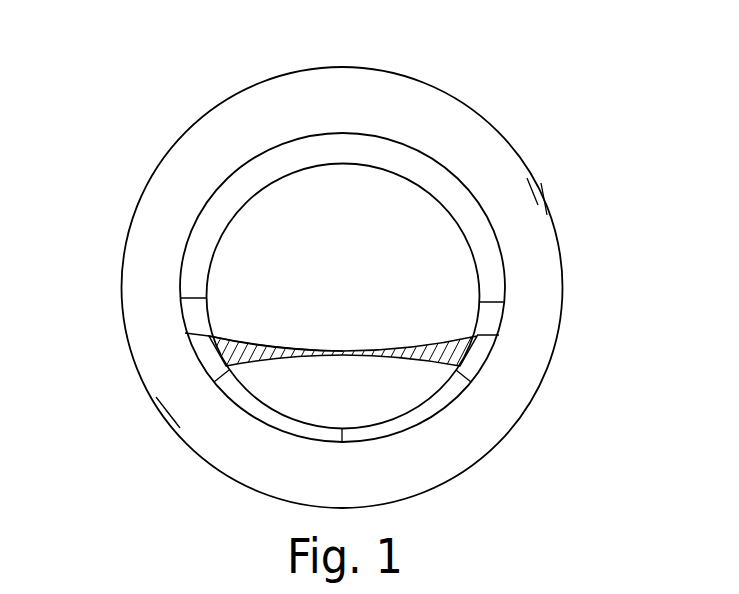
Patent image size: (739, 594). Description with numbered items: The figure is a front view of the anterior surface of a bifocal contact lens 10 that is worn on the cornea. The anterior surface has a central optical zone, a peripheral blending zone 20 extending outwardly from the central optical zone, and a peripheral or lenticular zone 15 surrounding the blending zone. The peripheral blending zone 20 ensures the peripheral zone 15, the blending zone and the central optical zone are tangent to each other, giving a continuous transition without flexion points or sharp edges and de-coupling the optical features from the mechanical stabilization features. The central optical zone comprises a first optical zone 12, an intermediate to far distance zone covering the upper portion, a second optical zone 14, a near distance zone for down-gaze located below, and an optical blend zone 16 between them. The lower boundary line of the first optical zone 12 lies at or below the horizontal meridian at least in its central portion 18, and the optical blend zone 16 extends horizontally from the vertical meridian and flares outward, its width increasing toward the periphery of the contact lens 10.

The bifocal contact lens 10 is at (472, 108).
The first optical zone 12 is at (262, 238).
The second optical zone 14 is at (406, 382).
The peripheral zone 15 is at (538, 298).
The optical blend zone 16 is at (236, 339).
The central portion 18 is at (342, 351).
The peripheral blending zone 20 is at (392, 440).